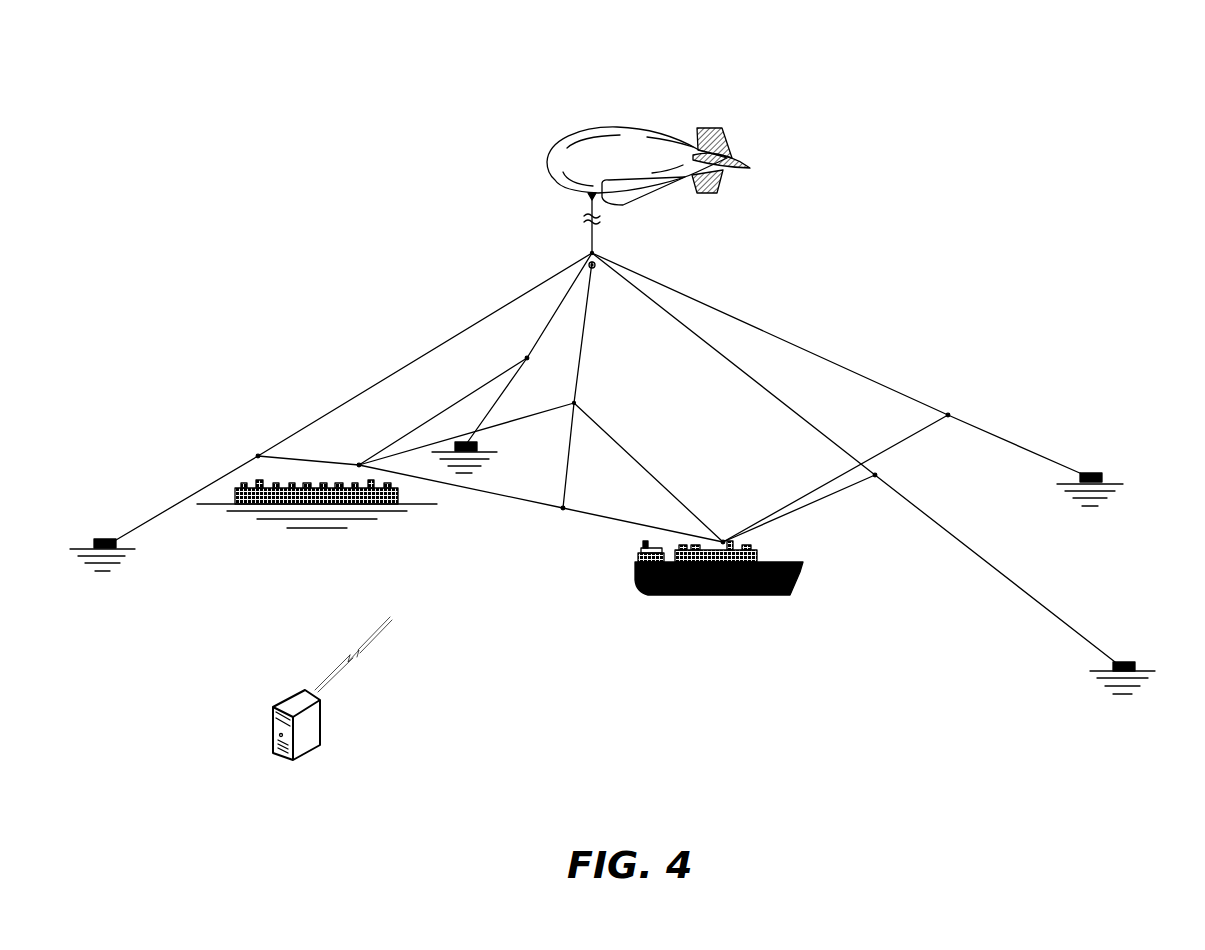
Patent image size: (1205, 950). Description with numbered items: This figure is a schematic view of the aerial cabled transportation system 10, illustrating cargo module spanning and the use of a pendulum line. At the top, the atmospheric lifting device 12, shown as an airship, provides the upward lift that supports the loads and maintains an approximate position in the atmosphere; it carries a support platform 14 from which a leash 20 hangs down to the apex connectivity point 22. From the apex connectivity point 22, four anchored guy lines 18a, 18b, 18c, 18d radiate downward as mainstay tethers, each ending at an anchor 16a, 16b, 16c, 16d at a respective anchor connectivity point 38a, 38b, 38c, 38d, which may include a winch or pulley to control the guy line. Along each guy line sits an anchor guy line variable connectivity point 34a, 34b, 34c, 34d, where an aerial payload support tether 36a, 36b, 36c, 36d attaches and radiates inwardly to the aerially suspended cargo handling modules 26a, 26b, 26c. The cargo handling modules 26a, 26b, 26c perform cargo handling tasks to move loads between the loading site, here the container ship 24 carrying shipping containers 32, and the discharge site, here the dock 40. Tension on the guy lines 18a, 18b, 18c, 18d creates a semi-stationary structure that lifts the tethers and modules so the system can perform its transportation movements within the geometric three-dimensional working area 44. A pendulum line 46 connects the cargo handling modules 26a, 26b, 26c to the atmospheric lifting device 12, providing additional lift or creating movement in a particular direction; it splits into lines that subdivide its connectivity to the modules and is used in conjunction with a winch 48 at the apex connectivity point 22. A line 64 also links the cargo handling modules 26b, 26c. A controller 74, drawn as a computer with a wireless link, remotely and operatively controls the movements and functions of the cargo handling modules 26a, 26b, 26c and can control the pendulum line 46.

The aerial cabled transportation system 10 is at (266, 102).
The atmospheric lifting device 12 is at (588, 128).
The support platform 14 is at (588, 199).
The leash 20 is at (595, 239).
The apex connectivity point 22 is at (590, 253).
The winch 48 is at (600, 259).
The pendulum line 46 is at (586, 330).
The geometric three-dimensional working area 44 is at (645, 381).
The anchored guy line 18a is at (155, 515).
The anchored guy line 18b is at (545, 334).
The anchored guy line 18c is at (1022, 443).
The anchored guy line 18d is at (1078, 630).
The anchor guy line variable connectivity point 34a is at (256, 455).
The anchor guy line variable connectivity point 34b is at (525, 357).
The anchor guy line variable connectivity point 34c is at (950, 413).
The anchor guy line variable connectivity point 34d is at (878, 474).
The aerial payload support tether 36a is at (290, 458).
The aerial payload support tether 36b is at (430, 412).
The aerial payload support tether 36c is at (926, 427).
The aerial payload support tether 36d is at (833, 496).
The aerially suspended cargo handling module 26a is at (358, 464).
The aerially suspended cargo handling module 26b is at (564, 507).
The aerially suspended cargo handling module 26c is at (724, 540).
The cable 64 is at (630, 518).
The anchor 16a is at (98, 538).
The anchor 16b is at (465, 441).
The anchor 16c is at (1101, 473).
The anchor 16d is at (1133, 661).
The anchor connectivity point 38a is at (118, 543).
The anchor connectivity point 38b is at (478, 445).
The anchor connectivity point 38c is at (1087, 472).
The anchor connectivity point 38d is at (1112, 664).
The dock 40 is at (414, 505).
The ship 24 is at (730, 561).
The shipping containers 32 is at (758, 548).
The controller 74 is at (286, 704).